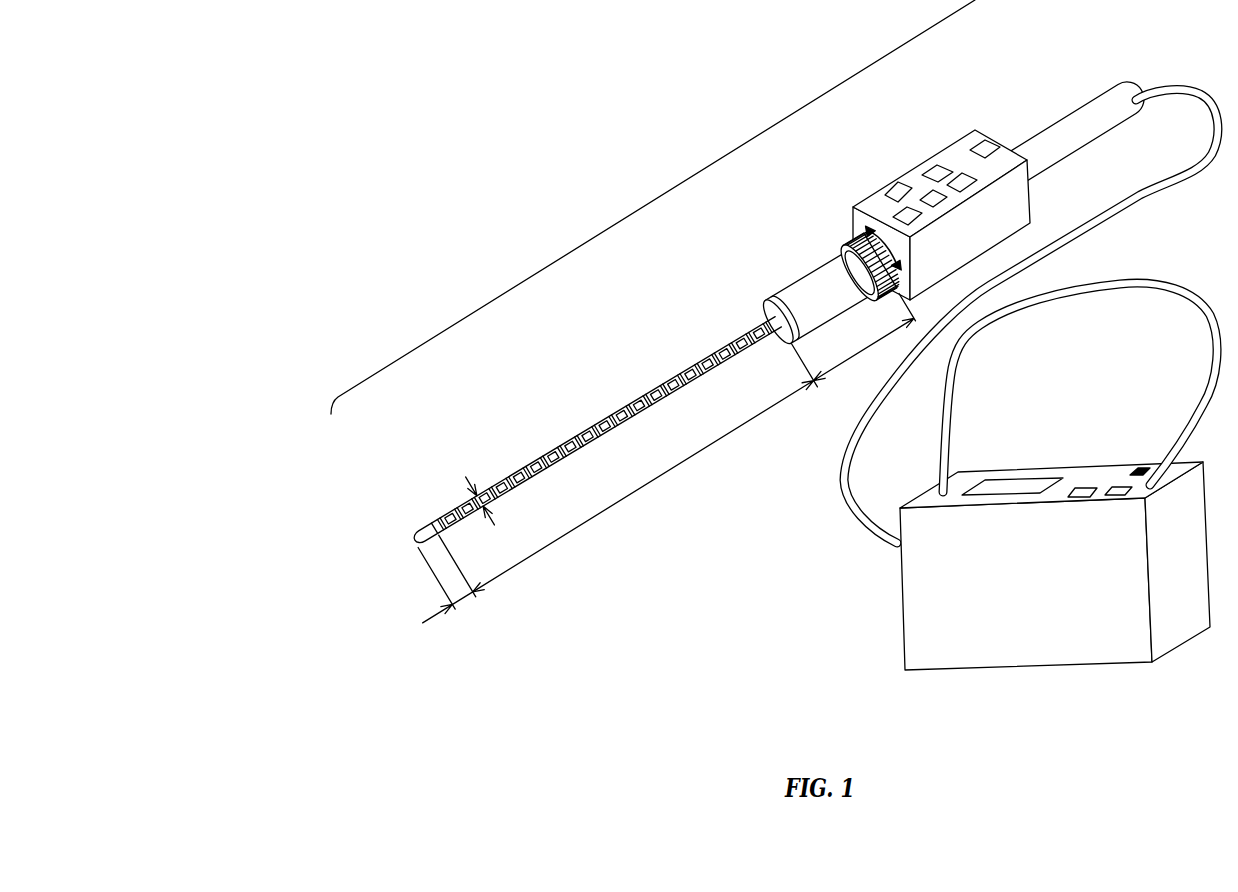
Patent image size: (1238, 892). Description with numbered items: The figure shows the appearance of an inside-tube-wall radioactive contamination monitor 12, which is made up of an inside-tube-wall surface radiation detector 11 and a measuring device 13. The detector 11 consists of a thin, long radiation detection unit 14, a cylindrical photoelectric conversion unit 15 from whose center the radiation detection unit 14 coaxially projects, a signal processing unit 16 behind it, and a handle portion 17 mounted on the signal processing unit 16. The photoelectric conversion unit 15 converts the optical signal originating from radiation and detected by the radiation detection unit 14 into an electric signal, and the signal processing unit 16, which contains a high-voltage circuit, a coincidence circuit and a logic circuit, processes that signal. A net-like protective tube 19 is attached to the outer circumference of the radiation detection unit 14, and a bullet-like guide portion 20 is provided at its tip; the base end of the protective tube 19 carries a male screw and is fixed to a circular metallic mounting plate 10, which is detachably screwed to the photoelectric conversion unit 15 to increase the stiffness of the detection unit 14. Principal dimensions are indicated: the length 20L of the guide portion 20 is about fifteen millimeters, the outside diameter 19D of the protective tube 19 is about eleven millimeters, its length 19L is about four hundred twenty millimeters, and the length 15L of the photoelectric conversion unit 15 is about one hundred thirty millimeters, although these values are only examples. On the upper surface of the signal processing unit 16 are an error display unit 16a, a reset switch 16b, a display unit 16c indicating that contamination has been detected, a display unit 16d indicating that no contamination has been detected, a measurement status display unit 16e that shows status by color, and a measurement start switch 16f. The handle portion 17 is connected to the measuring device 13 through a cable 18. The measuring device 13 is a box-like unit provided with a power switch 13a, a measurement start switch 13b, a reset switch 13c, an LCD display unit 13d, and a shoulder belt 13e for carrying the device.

The mounting plate 10 is at (763, 310).
The inside-tube-wall surface radiation detector 11 is at (705, 167).
The inside-tube-wall radioactive contamination monitor 12 is at (476, 84).
The measuring device 13 is at (868, 627).
The power switch 13a is at (1143, 478).
The measurement start switch 13b is at (1123, 485).
The reset switch 13c is at (1090, 491).
The LCD display unit 13d is at (993, 485).
The shoulder belt 13e is at (1120, 300).
The radiation detection unit 14 is at (607, 414).
The photoelectric conversion unit 15 is at (811, 278).
The length of the photoelectric conversion unit 15L is at (856, 356).
The signal processing unit 16 is at (940, 126).
The error display unit 16a is at (905, 221).
The reset switch 16b is at (936, 203).
The display unit to indicate that contamination has been detected 16c is at (958, 186).
The display unit to indicate that no contamination has been detected 16d is at (937, 167).
The measurement status display unit 16e is at (884, 193).
The measurement start switch 16f is at (990, 144).
The handle portion 17 is at (1068, 116).
The cable 18 is at (1142, 192).
The net-like protective tube 19 is at (563, 447).
The outside diameter of the net-like protective tube 19D is at (494, 526).
The length of the net-like protective tube 19L is at (598, 517).
The bullet-like guide portion 20 is at (418, 532).
The length of the bullet-like guide portion 20L is at (455, 602).